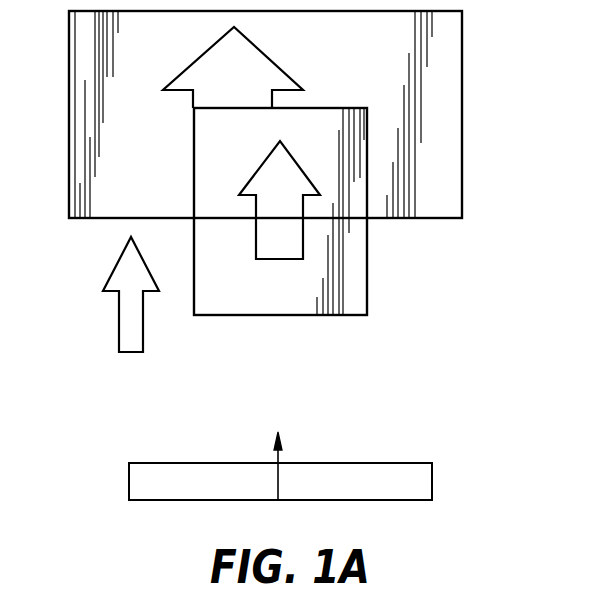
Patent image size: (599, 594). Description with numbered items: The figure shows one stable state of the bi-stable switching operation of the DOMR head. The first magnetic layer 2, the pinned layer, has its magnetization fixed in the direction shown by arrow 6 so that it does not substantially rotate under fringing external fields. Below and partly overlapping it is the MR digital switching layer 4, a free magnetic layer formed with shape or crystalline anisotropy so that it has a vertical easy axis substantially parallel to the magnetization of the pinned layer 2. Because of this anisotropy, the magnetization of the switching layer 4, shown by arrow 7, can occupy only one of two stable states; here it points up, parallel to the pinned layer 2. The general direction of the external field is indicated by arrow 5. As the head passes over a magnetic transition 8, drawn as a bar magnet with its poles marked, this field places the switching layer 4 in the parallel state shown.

The first magnetic layer 2 is at (462, 40).
The MR digital switching layer 4 is at (367, 233).
The arrow indicating direction of external field 5 is at (112, 270).
The arrow indicating magnetization direction of pinned layer 6 is at (233, 67).
The arrow indicating magnetization direction of switching layer 7 is at (279, 200).
The magnetic transition 8 is at (282, 456).